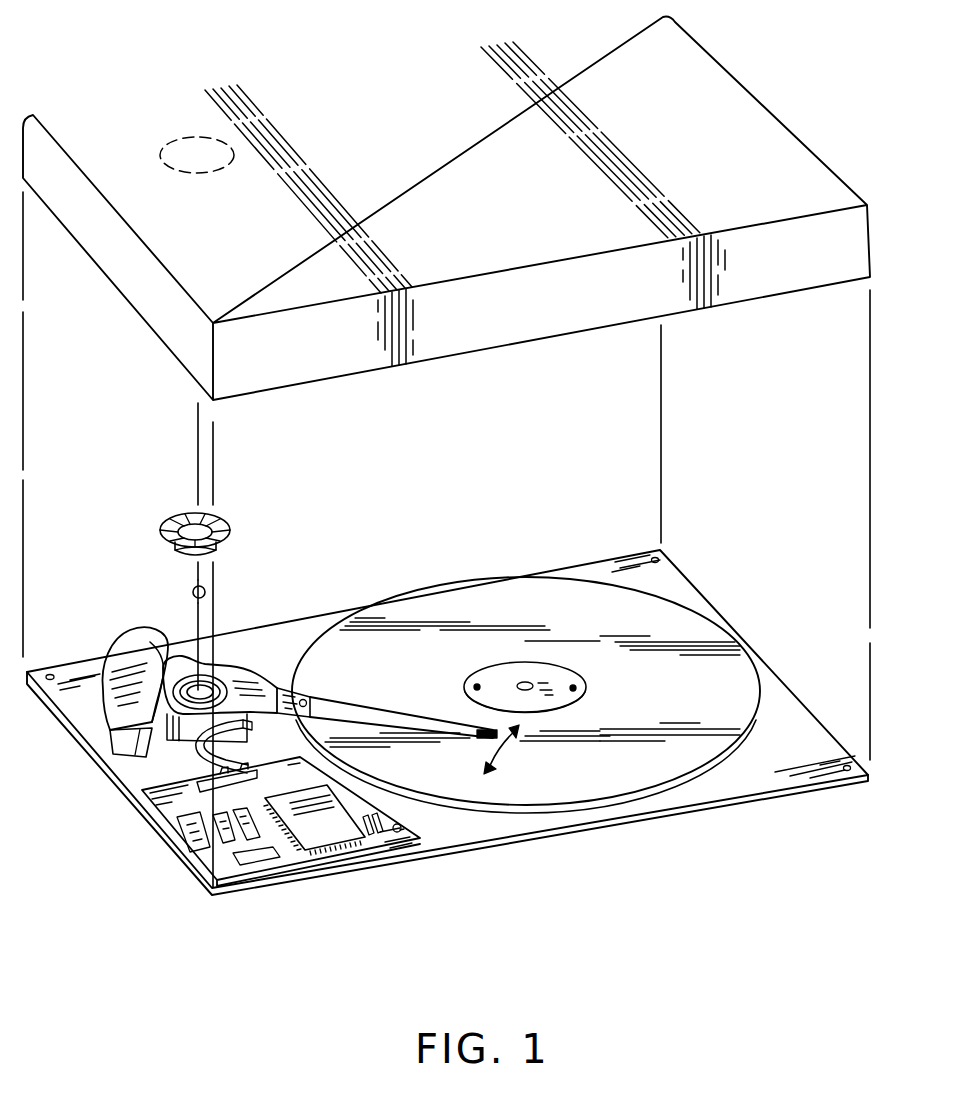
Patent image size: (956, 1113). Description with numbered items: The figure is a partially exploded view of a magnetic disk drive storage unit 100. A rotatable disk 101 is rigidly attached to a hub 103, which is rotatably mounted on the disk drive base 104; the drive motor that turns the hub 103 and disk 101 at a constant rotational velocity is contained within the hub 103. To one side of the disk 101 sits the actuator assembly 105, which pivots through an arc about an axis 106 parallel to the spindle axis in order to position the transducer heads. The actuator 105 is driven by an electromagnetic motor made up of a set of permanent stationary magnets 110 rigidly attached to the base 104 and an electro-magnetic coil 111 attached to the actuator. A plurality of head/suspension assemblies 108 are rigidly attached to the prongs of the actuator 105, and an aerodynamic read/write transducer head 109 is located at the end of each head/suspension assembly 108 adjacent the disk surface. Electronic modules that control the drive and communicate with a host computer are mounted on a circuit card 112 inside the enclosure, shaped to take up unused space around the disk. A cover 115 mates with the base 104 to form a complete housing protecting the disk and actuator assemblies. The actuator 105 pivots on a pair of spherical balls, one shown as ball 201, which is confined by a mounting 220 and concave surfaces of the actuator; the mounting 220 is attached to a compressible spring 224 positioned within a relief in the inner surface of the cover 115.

The magnetic disk drive storage unit 100 is at (90, 70).
The rotatable disk 101 is at (743, 678).
The hub 103 is at (572, 665).
The disk drive base 104 is at (700, 593).
The actuator assembly 105 is at (255, 668).
The axis 106 is at (212, 615).
The head/suspension assembly 108 is at (368, 703).
The read/write transducer head 109 is at (486, 742).
The permanent stationary magnets 110 is at (128, 655).
The electro-magnetic coil 111 is at (140, 770).
The circuit card 112 is at (297, 855).
The cover 115 is at (458, 356).
The spherical ball 201 is at (192, 592).
The mounting 220 is at (176, 551).
The compressible spring 224 is at (173, 522).